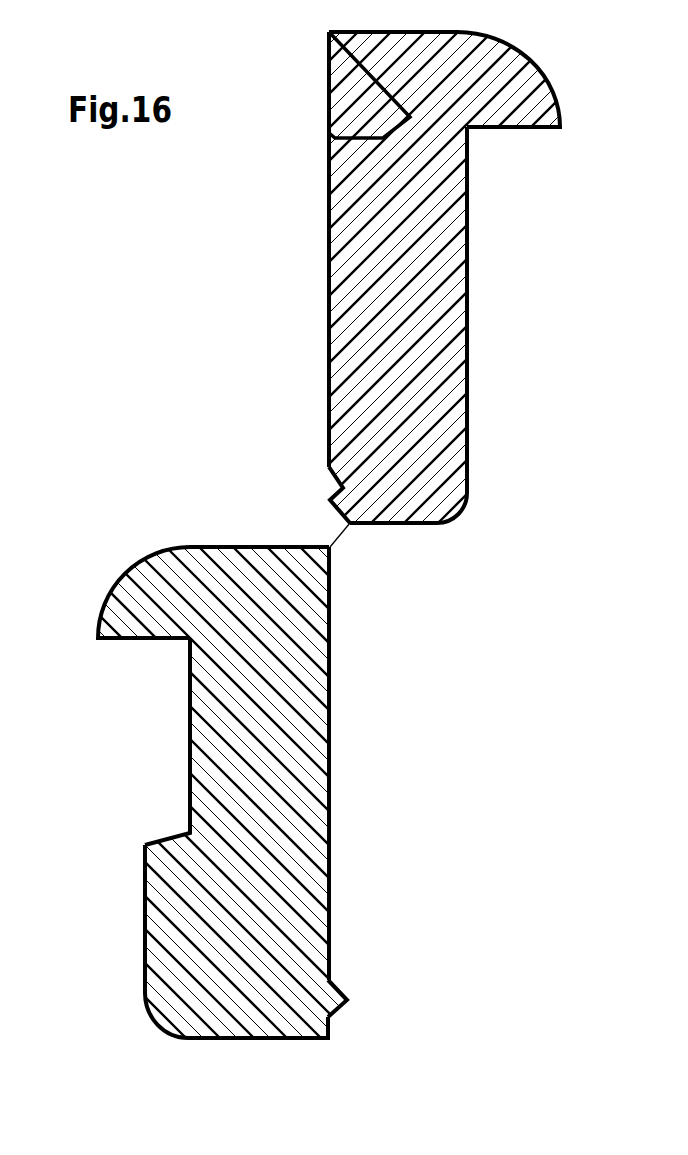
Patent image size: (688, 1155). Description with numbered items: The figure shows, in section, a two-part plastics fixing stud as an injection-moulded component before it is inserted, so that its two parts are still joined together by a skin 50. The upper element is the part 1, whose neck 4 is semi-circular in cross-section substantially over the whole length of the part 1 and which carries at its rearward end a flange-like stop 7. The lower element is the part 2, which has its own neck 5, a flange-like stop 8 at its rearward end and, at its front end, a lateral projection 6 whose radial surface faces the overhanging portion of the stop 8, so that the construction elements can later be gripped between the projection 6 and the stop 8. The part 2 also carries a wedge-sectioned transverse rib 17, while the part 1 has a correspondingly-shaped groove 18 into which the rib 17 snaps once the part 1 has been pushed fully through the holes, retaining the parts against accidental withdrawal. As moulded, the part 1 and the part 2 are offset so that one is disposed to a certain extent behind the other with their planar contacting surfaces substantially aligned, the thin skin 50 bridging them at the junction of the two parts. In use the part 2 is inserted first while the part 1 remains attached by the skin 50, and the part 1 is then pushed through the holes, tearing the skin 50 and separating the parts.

The part 1 is at (344, 277).
The part 2 is at (344, 792).
The neck 4 is at (425, 283).
The neck 5 is at (242, 702).
The lateral projection 6 is at (220, 887).
The flange-like stop 7 is at (528, 80).
The flange-like stop 8 is at (140, 598).
The transverse rib 17 is at (345, 1010).
The groove 18 is at (337, 488).
The skin 50 is at (342, 538).